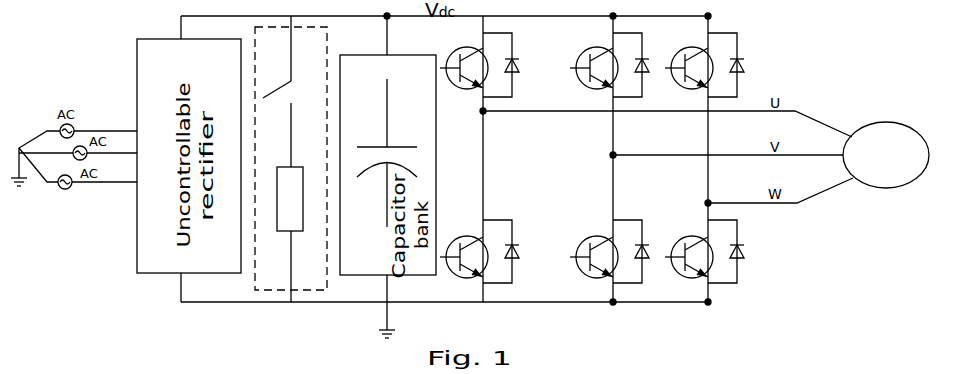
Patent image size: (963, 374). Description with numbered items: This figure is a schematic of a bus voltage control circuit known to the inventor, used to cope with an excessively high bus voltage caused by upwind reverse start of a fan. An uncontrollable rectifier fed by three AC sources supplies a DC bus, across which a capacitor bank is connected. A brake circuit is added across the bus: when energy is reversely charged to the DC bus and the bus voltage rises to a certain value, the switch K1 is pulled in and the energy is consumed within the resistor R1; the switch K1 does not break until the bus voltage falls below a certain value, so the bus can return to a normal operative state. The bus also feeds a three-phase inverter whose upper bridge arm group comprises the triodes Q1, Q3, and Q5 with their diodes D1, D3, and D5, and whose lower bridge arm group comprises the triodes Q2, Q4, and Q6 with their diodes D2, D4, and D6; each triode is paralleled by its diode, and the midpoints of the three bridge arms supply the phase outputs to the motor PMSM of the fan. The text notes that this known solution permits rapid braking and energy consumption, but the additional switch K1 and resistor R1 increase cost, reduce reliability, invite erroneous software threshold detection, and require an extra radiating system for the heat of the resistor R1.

The triode Q1 is at (464, 62).
The triode Q2 is at (464, 250).
The triode Q3 is at (594, 62).
The triode Q4 is at (594, 250).
The triode Q5 is at (689, 62).
The triode Q6 is at (689, 250).
The diode D1 is at (512, 65).
The diode D2 is at (512, 251).
The diode D3 is at (640, 64).
The diode D4 is at (638, 250).
The diode D5 is at (740, 65).
The diode D6 is at (740, 251).
The switch K1 is at (289, 91).
The resistor R1 is at (299, 234).
The permanent magnet synchronous motor PMSM is at (886, 155).